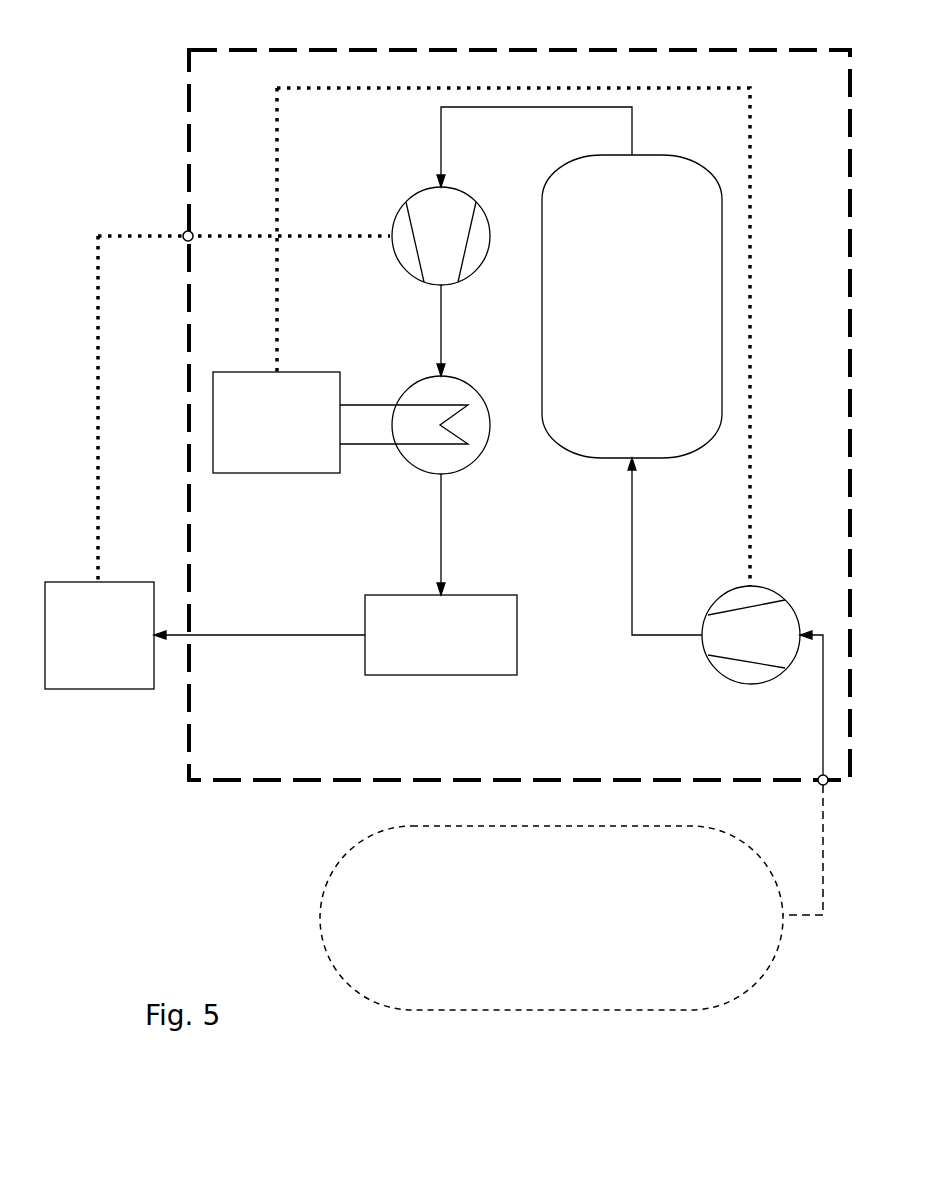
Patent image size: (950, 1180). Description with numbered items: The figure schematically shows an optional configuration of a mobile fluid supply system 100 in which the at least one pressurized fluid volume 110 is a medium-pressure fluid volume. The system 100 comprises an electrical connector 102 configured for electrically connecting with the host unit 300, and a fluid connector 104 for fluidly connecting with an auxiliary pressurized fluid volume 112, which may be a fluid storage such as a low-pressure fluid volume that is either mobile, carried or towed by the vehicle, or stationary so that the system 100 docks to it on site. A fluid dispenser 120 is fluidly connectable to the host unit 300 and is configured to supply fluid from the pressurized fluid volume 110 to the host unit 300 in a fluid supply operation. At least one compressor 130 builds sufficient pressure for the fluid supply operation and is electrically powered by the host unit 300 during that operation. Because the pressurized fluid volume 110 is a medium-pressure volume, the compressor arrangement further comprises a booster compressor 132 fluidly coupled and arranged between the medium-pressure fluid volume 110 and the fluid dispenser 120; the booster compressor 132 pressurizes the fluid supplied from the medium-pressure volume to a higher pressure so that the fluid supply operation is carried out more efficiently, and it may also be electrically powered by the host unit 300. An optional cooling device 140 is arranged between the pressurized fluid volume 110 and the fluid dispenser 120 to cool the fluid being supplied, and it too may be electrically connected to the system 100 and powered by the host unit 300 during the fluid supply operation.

The mobile fluid supply system 100 is at (183, 127).
The electrical connector 102 is at (182, 235).
The fluid connector 104 is at (821, 773).
The pressurized fluid volume 110 is at (653, 319).
The auxiliary pressurized fluid volume 112 is at (577, 932).
The fluid dispenser 120 is at (456, 637).
The compressor 130 is at (748, 637).
The booster compressor 132 is at (427, 237).
The cooling device 140 is at (330, 496).
The host unit 300 is at (123, 649).